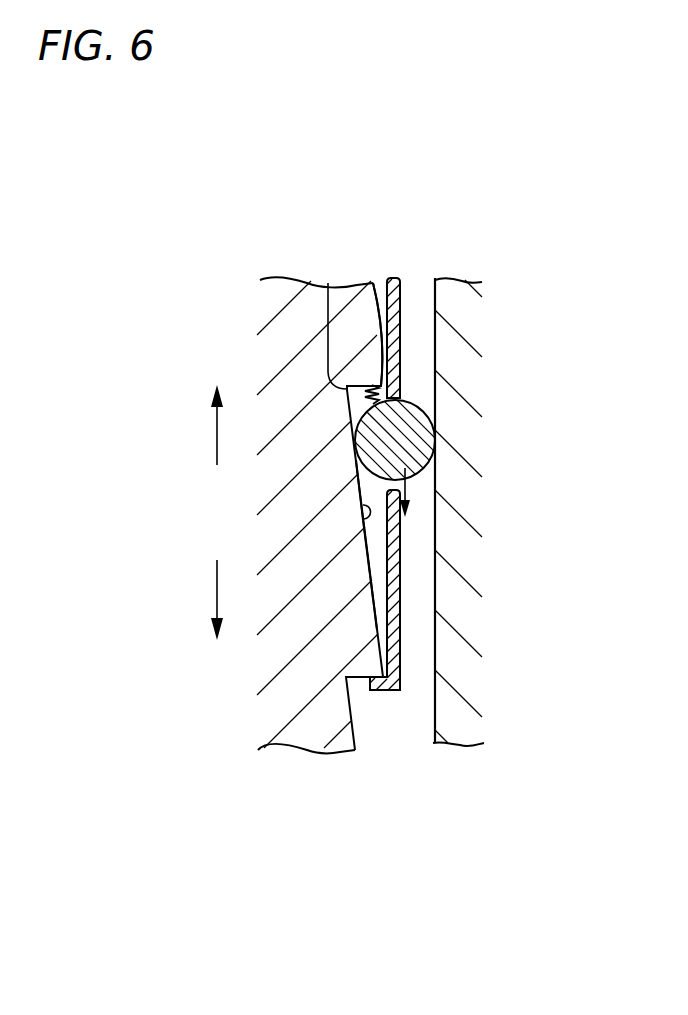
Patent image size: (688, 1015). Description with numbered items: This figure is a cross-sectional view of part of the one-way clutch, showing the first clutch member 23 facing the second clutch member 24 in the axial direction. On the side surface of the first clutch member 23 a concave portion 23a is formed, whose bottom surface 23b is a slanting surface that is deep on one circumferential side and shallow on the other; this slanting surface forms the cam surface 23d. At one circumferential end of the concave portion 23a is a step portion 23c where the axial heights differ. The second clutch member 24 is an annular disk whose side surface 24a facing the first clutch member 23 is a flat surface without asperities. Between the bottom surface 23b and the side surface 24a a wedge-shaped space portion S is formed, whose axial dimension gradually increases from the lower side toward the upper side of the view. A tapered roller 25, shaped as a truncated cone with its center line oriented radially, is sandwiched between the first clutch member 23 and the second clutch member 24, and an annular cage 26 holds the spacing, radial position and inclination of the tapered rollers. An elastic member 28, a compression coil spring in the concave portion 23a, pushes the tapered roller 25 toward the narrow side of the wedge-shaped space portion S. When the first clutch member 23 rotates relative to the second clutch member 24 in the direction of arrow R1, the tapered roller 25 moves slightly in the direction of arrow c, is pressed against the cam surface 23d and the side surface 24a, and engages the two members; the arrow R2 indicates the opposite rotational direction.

The first clutch member 23 is at (307, 319).
The concave portion 23a is at (368, 544).
The bottom surface 23b is at (365, 527).
The step portion 23c is at (328, 283).
The cam surface 23d is at (245, 510).
The second clutch member 24 is at (455, 672).
The side surface 24a is at (434, 706).
The tapered roller 25 is at (413, 413).
The annular cage 26 is at (400, 311).
The elastic member 28 is at (368, 386).
The direction of roller movement c is at (411, 481).
The wedge-shaped space portion S is at (382, 582).
The direction of relative rotation R1 is at (217, 443).
The second rotation direction R2 is at (217, 580).